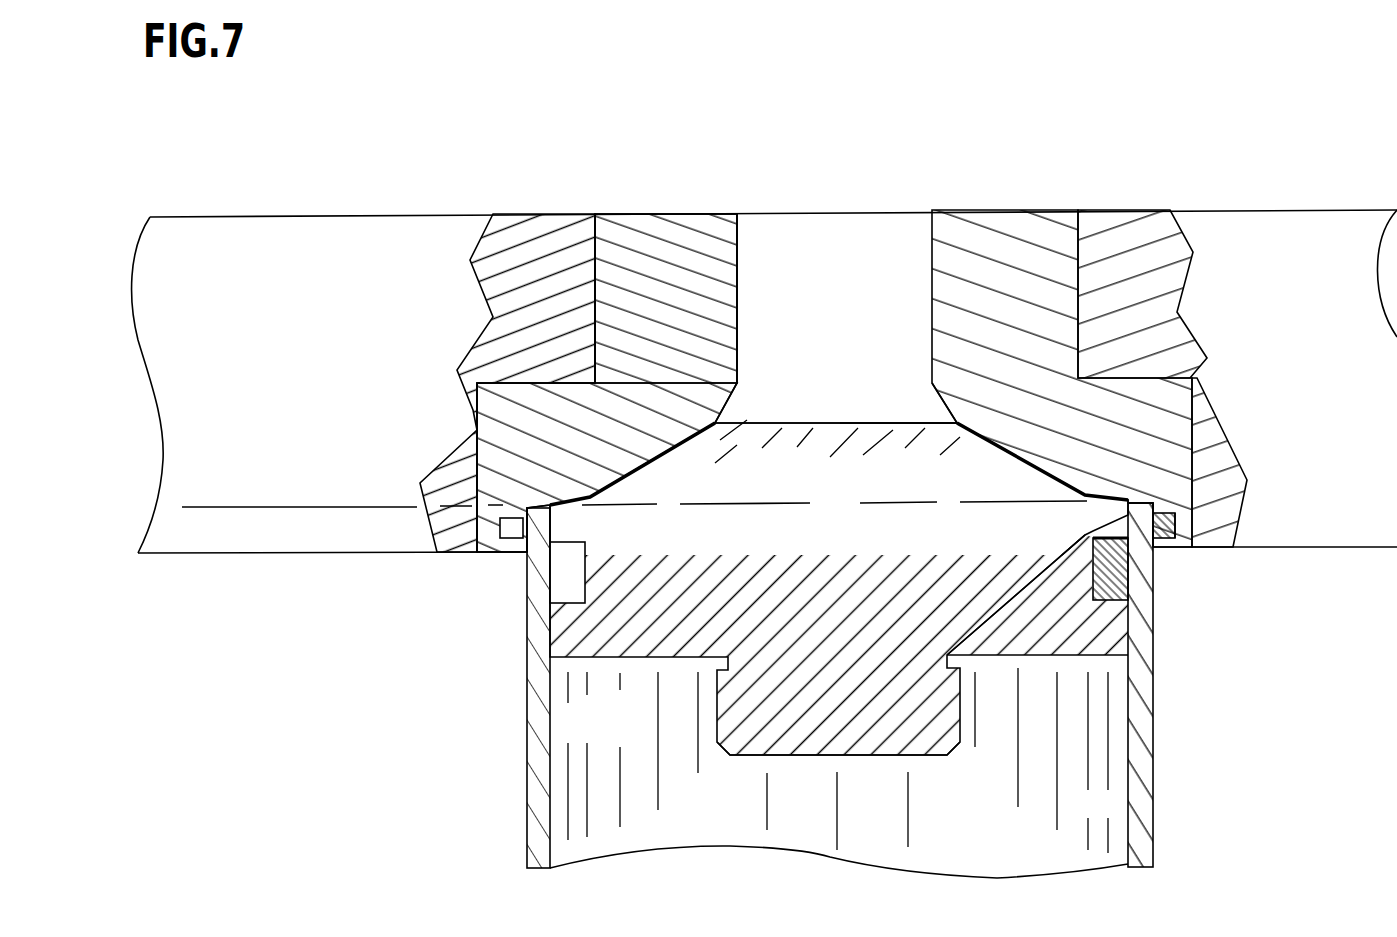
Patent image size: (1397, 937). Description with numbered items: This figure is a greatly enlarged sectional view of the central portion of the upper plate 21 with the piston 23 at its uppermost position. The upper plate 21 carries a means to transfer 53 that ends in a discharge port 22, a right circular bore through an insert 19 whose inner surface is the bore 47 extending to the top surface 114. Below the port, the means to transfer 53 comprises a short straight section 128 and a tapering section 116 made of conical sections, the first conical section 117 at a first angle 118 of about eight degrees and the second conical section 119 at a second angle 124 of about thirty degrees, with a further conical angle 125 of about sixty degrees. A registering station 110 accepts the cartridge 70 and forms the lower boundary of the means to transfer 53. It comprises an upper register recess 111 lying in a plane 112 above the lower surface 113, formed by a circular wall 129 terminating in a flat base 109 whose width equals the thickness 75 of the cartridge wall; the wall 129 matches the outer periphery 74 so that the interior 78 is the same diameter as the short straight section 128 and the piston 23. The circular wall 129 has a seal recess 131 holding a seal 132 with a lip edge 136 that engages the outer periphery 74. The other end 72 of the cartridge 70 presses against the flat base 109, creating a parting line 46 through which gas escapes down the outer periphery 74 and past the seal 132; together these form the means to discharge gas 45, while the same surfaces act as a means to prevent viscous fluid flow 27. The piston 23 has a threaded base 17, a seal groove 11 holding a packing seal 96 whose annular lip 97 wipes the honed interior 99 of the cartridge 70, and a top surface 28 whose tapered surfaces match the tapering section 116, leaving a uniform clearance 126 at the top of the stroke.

The means to transfer 53 is at (689, 143).
The top surface 114 is at (288, 214).
The discharge port 22 is at (762, 237).
The bore 47 is at (740, 283).
The upper plate 21 is at (375, 322).
The insert 19 is at (628, 390).
The conical angle 125 is at (831, 413).
The uniform clearance 126 is at (717, 423).
The top surface of piston 28 is at (768, 423).
The second angle 124 is at (935, 436).
The circular wall 129 is at (467, 477).
The means to discharge gas 45 is at (1178, 450).
The plane 112 is at (255, 507).
The other end of cartridge 72 is at (1153, 507).
The means to prevent viscous fluid flow 27 is at (1168, 513).
The lip edge 136 is at (1175, 525).
The seal 132 is at (1175, 527).
The tapering section 116 is at (669, 483).
The first angle 118 is at (1055, 452).
The short straight section 128 is at (560, 506).
The parting line 46 is at (553, 507).
The second conical section 119 is at (990, 440).
The first conical section 117 is at (1095, 510).
The registering station 110 is at (1013, 568).
The annular lip 97 is at (1033, 580).
The packing seal 96 is at (1153, 575).
The flat base 109 is at (552, 507).
The seal groove 11 is at (572, 593).
The piston 23 is at (781, 632).
The seal recess 131 is at (507, 535).
The lower surface 113 is at (360, 553).
The upper register recess 111 is at (523, 550).
The interior of cartridge 99 is at (553, 720).
The cartridge 70 is at (1153, 689).
The outer periphery 74 is at (525, 760).
The interior 78 is at (975, 802).
The base 17 is at (737, 737).
The thickness 75 is at (1117, 807).